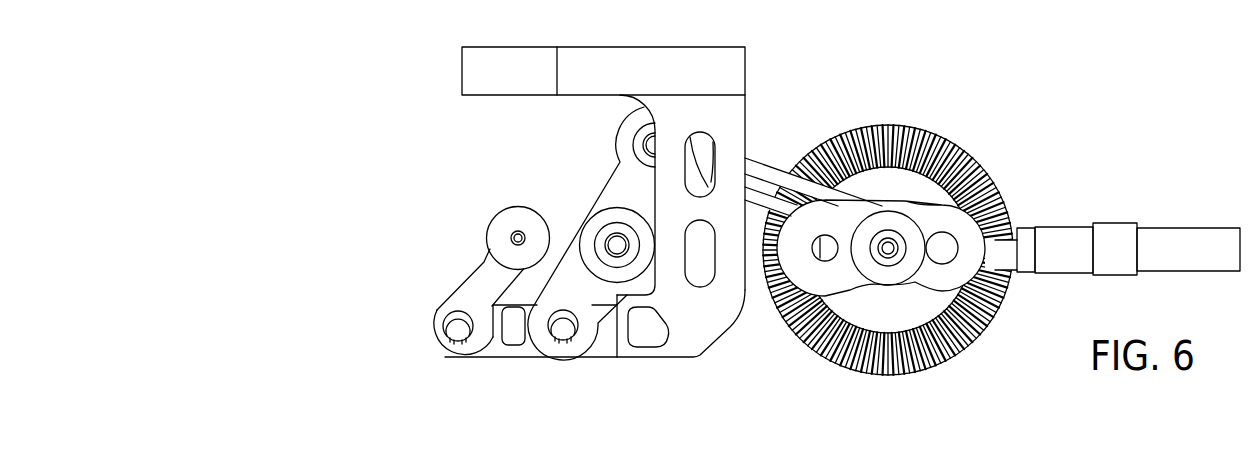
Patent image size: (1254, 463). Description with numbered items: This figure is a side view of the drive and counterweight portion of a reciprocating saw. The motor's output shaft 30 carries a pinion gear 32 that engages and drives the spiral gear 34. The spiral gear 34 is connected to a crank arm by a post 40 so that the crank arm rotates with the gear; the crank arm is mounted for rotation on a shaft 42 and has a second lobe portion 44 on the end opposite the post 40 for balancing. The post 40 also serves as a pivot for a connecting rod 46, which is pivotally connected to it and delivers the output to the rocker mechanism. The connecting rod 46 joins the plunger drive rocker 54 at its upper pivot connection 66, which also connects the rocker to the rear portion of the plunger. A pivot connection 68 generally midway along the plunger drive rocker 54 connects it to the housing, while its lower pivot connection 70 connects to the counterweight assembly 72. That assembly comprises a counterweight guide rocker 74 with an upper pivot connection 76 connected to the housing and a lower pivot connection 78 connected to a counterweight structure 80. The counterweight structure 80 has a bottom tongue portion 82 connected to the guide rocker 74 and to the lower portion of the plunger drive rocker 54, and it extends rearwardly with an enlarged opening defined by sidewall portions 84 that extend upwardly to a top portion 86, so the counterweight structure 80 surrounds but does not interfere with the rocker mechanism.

The output shaft 30 is at (1060, 253).
The pinion gear 32 is at (997, 255).
The spiral gear 34 is at (930, 362).
The post 40 is at (1006, 208).
The shaft 42 is at (887, 246).
The second lobe portion 44 is at (805, 275).
The connecting rod 46 is at (772, 166).
The plunger drive rocker 54 is at (633, 182).
The upper pivot connection 66 is at (648, 141).
The pivot connection 68 is at (612, 246).
The lower pivot connection 70 is at (565, 330).
The counterweight assembly 72 is at (447, 297).
The counterweight guide rocker 74 is at (486, 280).
The upper pivot connection 76 is at (515, 238).
The lower pivot connection 78 is at (456, 325).
The counterweight structure 80 is at (714, 352).
The bottom tongue portion 82 is at (512, 358).
The sidewall portions 84 is at (728, 152).
The top portion 86 is at (595, 72).